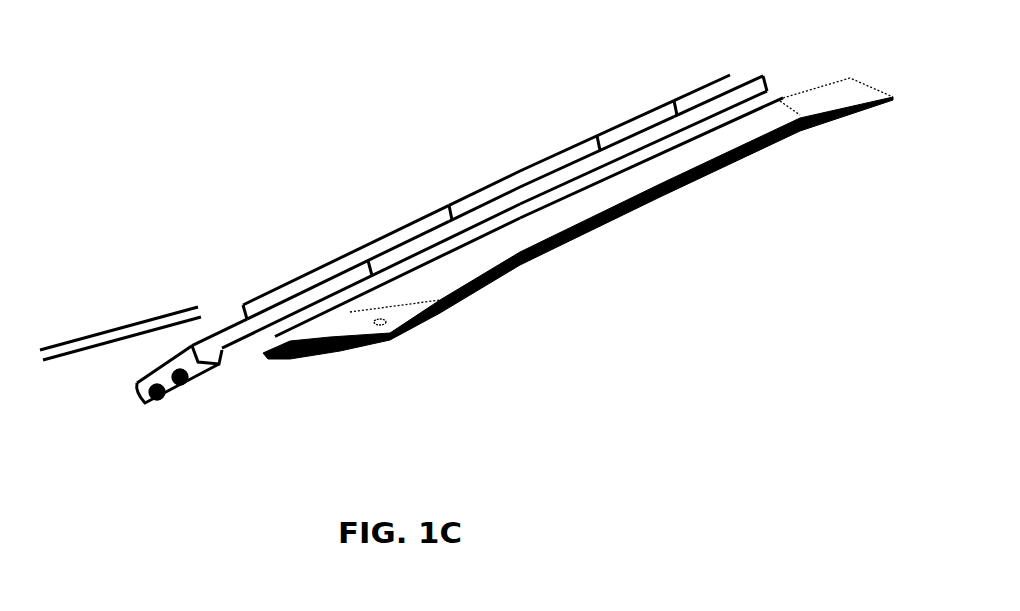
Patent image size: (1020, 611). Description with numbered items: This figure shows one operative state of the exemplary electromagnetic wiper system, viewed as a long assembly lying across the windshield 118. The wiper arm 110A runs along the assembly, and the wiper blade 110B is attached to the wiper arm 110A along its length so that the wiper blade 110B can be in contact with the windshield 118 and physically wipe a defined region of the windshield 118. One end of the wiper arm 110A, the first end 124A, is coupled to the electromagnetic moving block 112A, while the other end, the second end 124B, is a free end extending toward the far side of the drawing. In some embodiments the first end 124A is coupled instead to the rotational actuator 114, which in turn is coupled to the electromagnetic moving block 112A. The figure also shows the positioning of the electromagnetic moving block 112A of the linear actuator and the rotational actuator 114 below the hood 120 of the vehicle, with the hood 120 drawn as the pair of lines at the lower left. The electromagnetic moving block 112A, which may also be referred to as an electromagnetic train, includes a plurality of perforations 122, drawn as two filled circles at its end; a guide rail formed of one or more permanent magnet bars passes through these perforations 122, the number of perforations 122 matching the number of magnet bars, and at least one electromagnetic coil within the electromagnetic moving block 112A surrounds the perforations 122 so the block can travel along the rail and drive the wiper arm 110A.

The wiper arm 110A is at (460, 210).
The wiper blade 110B is at (552, 198).
The electromagnetic moving block 112A is at (155, 375).
The rotational actuator 114 is at (240, 328).
The windshield 118 is at (592, 197).
The hood 120 is at (177, 310).
The perforations 122 is at (180, 385).
The first end 124A is at (268, 307).
The second end 124B is at (707, 80).